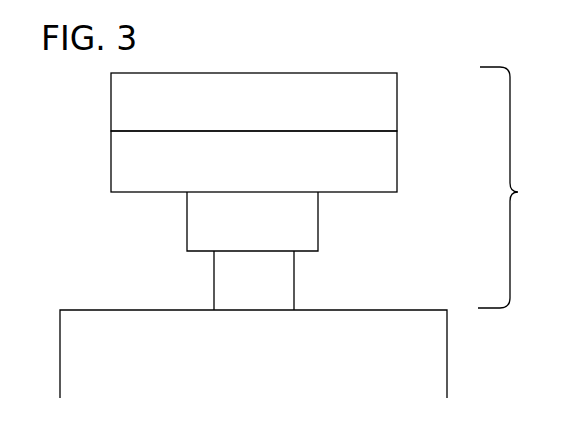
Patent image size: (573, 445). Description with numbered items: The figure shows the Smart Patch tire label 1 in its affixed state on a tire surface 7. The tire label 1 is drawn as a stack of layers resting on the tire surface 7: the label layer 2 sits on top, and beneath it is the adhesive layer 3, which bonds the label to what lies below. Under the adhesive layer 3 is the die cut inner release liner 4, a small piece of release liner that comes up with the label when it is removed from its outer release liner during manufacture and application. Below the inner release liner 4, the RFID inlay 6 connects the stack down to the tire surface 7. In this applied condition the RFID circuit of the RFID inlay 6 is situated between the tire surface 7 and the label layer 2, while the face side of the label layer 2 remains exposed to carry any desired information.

The tire label 1 is at (518, 192).
The label layer 2 is at (385, 103).
The adhesive layer 3 is at (385, 163).
The inner release liner 4 is at (307, 222).
The RFID inlay 6 is at (282, 282).
The tire surface 7 is at (435, 368).